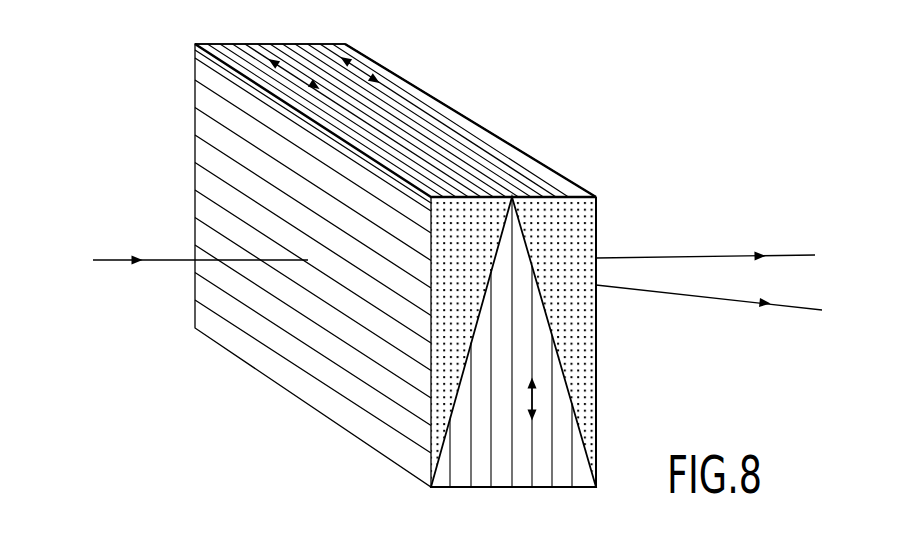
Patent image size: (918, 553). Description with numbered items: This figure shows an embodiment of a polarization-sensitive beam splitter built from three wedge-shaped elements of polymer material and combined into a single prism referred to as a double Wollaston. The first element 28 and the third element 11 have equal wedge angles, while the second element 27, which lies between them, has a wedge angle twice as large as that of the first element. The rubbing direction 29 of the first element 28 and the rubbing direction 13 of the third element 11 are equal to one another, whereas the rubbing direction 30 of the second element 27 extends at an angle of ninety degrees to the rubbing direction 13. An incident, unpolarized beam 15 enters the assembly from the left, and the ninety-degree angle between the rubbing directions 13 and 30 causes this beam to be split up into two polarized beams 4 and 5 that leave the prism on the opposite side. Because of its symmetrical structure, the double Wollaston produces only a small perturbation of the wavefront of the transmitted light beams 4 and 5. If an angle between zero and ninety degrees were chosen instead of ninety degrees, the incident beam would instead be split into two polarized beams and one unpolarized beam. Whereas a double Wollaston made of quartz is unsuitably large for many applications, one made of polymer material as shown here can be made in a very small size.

The transmitted light beam 4 is at (798, 256).
The transmitted light beam 5 is at (794, 305).
The third element 11 is at (556, 176).
The rubbing direction of the third element 13 is at (368, 72).
The incident unpolarized beam 15 is at (113, 260).
The second element 27 is at (522, 488).
The first element 28 is at (242, 60).
The rubbing direction of the first element 29 is at (288, 66).
The rubbing direction of the second element 30 is at (534, 397).